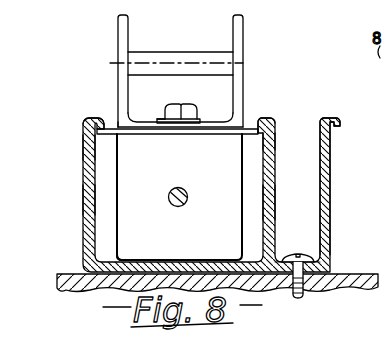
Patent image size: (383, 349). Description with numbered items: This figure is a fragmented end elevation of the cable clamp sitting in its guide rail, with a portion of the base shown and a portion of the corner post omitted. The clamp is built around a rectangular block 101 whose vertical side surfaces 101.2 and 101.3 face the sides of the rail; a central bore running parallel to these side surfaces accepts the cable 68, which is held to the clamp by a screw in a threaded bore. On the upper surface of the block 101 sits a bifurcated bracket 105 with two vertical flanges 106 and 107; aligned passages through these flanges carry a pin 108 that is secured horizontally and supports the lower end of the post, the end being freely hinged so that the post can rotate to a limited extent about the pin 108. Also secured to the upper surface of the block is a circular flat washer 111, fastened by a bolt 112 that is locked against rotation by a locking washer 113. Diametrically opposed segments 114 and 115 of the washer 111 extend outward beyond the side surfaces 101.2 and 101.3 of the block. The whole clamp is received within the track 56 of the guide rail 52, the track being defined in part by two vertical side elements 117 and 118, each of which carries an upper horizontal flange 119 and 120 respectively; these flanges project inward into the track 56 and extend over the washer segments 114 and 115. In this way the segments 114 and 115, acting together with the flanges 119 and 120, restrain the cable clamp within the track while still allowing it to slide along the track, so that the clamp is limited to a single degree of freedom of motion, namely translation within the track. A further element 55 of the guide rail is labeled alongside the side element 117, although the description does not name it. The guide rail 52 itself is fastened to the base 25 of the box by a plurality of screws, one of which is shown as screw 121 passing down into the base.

The base 25 is at (73, 274).
The guide rail 52 is at (297, 125).
The channel 55 is at (320, 172).
The track 56 is at (81, 162).
The cable 68 is at (177, 208).
The rectangular block 101 is at (233, 195).
The vertical side surface 101.2 is at (256, 164).
The vertical side surface 101.3 is at (117, 226).
The bifurcated bracket 105 is at (191, 68).
The vertical flange 106 is at (118, 33).
The vertical flange 107 is at (233, 18).
The pin 108 is at (180, 52).
The circular flat washer 111 is at (118, 128).
The bolt 112 is at (190, 92).
The locking washer 113 is at (153, 121).
The segment 114 is at (267, 132).
The segment 115 is at (87, 145).
The vertical side element 117 is at (273, 198).
The vertical side element 118 is at (86, 194).
The upper horizontal flange 119 is at (257, 104).
The upper horizontal flange 120 is at (86, 118).
The screw 121 is at (305, 254).